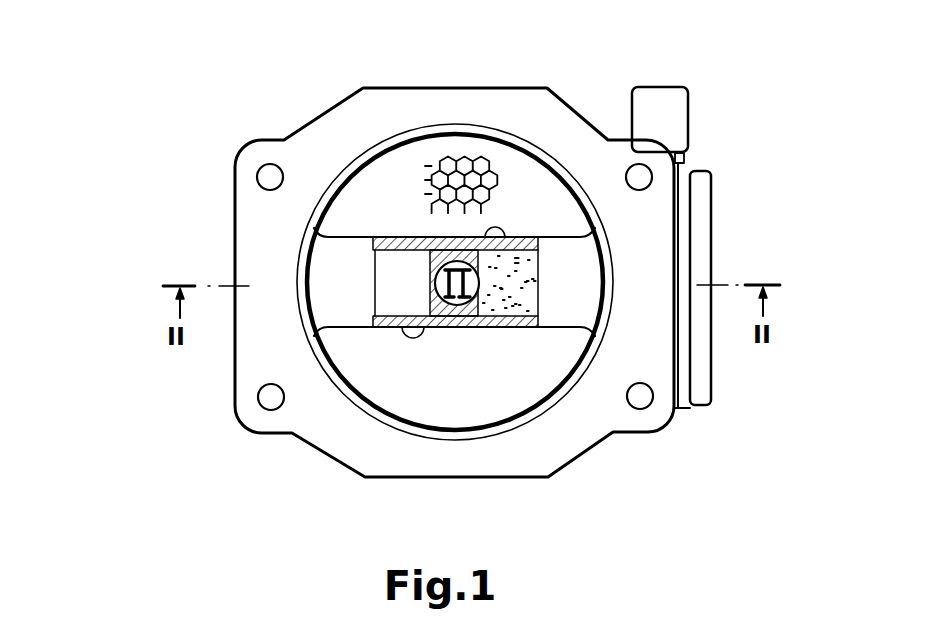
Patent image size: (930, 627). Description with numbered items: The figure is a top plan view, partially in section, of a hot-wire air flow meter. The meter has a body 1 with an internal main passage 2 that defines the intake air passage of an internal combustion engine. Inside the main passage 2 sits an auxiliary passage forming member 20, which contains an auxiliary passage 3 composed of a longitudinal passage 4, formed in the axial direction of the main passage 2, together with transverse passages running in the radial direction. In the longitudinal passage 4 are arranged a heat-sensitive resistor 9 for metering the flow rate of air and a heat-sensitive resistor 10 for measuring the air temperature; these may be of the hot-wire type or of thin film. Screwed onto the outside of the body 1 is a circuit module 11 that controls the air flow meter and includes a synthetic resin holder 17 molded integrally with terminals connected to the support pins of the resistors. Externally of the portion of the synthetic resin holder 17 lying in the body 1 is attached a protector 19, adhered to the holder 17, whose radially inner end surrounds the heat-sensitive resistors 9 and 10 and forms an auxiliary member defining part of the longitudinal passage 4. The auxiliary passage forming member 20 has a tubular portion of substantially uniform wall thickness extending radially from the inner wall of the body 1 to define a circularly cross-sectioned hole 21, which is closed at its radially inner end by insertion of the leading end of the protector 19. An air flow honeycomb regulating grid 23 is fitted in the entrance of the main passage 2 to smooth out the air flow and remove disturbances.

The body 1 is at (285, 140).
The main passage 2 is at (360, 364).
The auxiliary passage 3 is at (446, 398).
The longitudinal passage 4 is at (457, 283).
The heat-sensitive resistor 9 is at (413, 338).
The heat-sensitive resistor 10 is at (490, 325).
The circuit module 11 is at (712, 255).
The synthetic resin holder 17 is at (506, 265).
The protector 19 is at (428, 262).
The auxiliary passage forming member 20 is at (556, 337).
The hole 21 is at (388, 287).
The air flow honeycomb regulating grid 23 is at (448, 157).